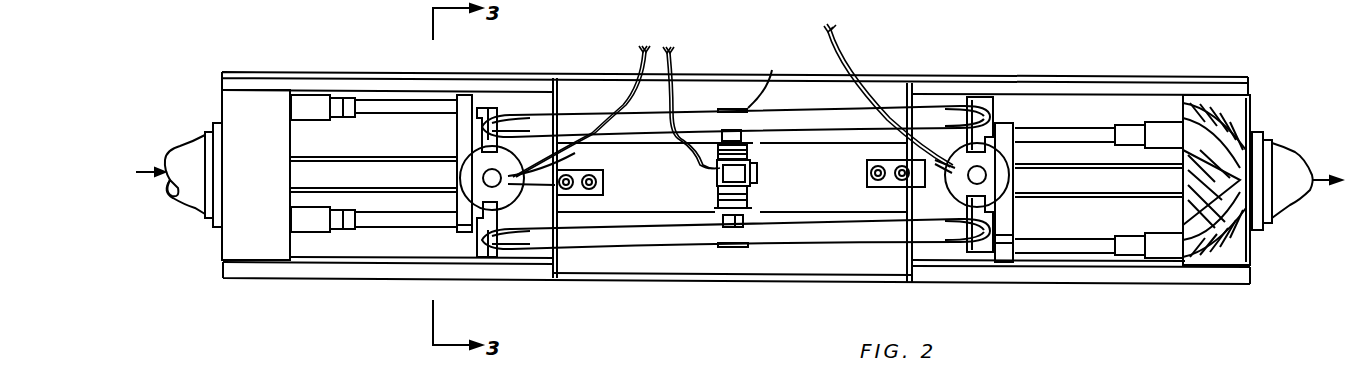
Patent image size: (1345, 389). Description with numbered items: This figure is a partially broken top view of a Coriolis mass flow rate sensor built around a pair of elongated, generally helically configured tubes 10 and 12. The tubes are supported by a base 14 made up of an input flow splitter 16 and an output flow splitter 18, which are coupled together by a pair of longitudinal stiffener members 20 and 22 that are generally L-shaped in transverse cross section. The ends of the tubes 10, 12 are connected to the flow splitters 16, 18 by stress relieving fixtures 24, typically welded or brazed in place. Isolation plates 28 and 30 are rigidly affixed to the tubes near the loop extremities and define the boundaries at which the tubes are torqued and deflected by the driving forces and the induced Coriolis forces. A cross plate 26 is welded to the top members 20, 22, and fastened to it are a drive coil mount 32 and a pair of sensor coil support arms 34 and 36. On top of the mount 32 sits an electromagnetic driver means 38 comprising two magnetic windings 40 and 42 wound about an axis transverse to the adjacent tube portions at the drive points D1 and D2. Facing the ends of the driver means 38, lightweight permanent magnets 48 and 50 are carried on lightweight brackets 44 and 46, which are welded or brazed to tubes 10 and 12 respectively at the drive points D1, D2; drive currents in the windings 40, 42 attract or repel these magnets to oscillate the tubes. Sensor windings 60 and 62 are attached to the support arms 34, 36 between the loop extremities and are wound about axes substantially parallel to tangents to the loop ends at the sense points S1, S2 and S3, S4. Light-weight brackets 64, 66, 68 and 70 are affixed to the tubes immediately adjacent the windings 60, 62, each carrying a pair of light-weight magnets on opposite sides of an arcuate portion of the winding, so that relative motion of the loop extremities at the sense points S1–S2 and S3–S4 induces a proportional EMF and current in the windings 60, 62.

The tube 10 is at (787, 108).
The tube 12 is at (792, 245).
The base 14 is at (327, 285).
The input flow splitter 16 is at (238, 249).
The output flow splitter 18 is at (1256, 250).
The longitudinal stiffener member 20 is at (407, 273).
The longitudinal stiffener member 22 is at (358, 80).
The stress relieving fixture 24 is at (305, 102).
The cross plate 26 is at (603, 270).
The isolation plate 28 is at (480, 110).
The isolation plate 30 is at (1010, 123).
The drive coil mount 32 is at (760, 178).
The sensor coil support arm 34 is at (607, 172).
The sensor coil support arm 36 is at (887, 188).
The electromagnetic driver means 38 is at (763, 189).
The magnetic winding 40 is at (713, 196).
The magnetic winding 42 is at (616, 104).
The bracket 44 is at (772, 70).
The bracket 46 is at (733, 249).
The permanent magnet 48 is at (752, 135).
The permanent magnet 50 is at (744, 218).
The sensor winding 60 is at (460, 178).
The sensor winding 62 is at (1015, 210).
The bracket 64 is at (497, 112).
The bracket 66 is at (492, 252).
The bracket 68 is at (972, 100).
The bracket 70 is at (987, 262).
The sense point S1 is at (470, 245).
The sense point S2 is at (466, 108).
The sense point S3 is at (990, 97).
The sense point S4 is at (1003, 240).
The drive point D1 is at (739, 100).
The drive point D2 is at (714, 258).